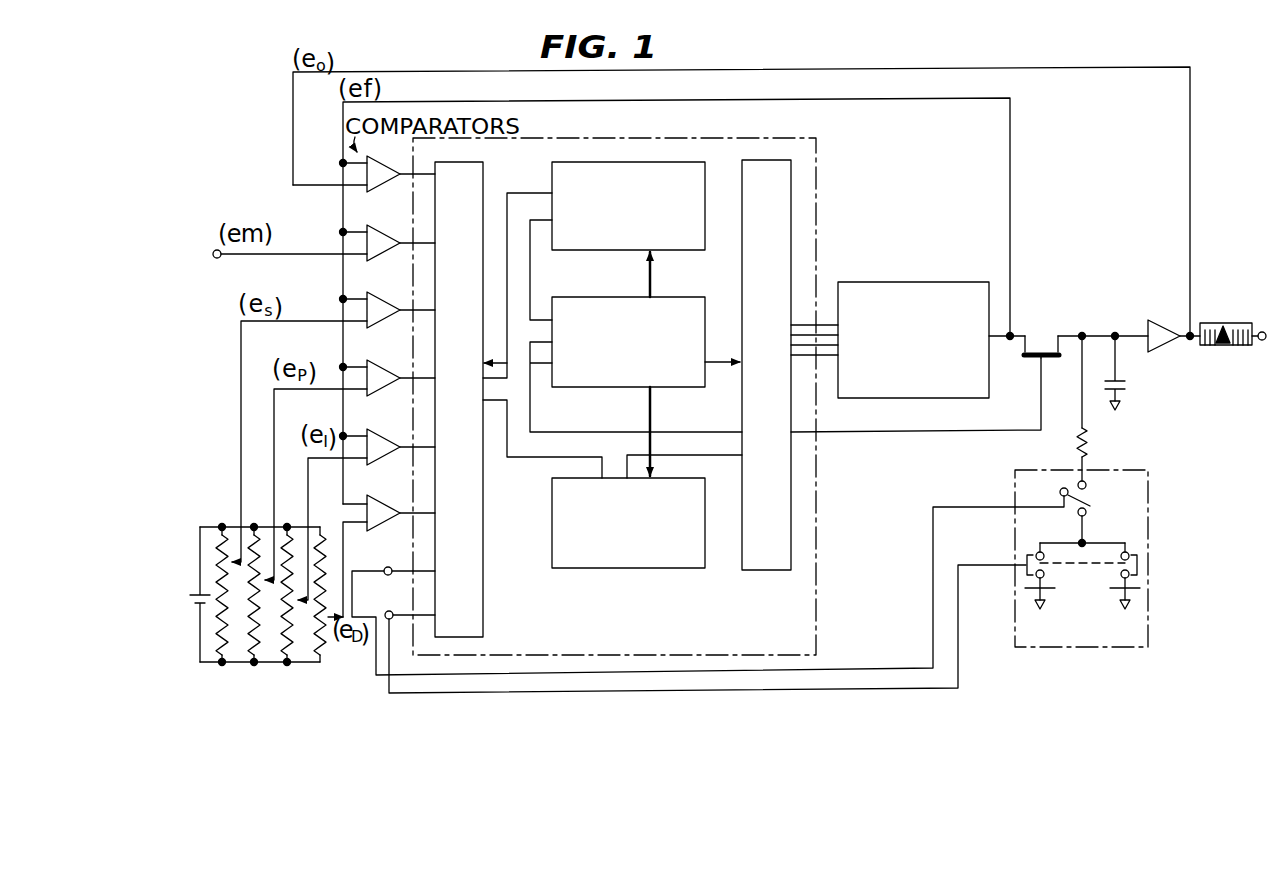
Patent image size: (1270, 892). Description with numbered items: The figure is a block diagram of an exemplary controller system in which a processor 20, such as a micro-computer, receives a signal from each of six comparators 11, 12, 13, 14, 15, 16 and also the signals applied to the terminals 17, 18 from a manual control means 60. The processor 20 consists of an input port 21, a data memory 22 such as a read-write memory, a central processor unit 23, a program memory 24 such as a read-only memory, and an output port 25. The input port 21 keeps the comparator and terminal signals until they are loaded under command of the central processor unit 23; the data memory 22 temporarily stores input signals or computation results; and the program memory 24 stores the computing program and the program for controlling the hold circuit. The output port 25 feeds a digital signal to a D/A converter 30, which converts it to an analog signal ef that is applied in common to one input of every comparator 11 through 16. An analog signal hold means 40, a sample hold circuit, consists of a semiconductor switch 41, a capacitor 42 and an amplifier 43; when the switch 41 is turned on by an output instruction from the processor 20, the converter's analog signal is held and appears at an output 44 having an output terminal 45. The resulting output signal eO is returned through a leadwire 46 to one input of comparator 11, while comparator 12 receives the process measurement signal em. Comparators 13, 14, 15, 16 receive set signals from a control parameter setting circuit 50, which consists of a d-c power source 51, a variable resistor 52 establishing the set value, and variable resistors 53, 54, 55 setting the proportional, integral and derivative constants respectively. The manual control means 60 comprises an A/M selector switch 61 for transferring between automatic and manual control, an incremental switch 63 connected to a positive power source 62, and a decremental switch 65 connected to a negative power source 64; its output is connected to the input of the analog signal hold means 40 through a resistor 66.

The comparator 11 is at (371, 160).
The comparator 12 is at (371, 226).
The comparator 13 is at (371, 294).
The comparator 14 is at (371, 361).
The comparator 15 is at (371, 430).
The comparator 16 is at (371, 496).
The terminal 17 is at (394, 564).
The terminal 18 is at (392, 622).
The processor 20 is at (720, 138).
The input port 21 is at (483, 578).
The data memory 22 is at (596, 250).
The central processor unit 23 is at (596, 387).
The program memory 24 is at (598, 568).
The output port 25 is at (768, 570).
The D/A converter 30 is at (910, 282).
The analog signal hold means 40 is at (1125, 322).
The semiconductor switch 41 is at (1040, 350).
The capacitor 42 is at (1124, 388).
The amplifier 43 is at (1160, 320).
The output 44 is at (1212, 346).
The output terminal 45 is at (1260, 332).
The leadwire 46 is at (974, 68).
The control parameter setting circuit 50 is at (237, 522).
The d-c power source 51 is at (186, 594).
The variable resistor 52 is at (214, 642).
The variable resistor 53 is at (247, 642).
The variable resistor 54 is at (281, 642).
The variable resistor 55 is at (323, 642).
The manual control means 60 is at (1127, 470).
The A/M selector switch 61 is at (1090, 506).
The positive power source 62 is at (1048, 594).
The incremental switch 63 is at (1020, 568).
The negative power source 64 is at (1112, 594).
The decremental switch 65 is at (1140, 568).
The resistor 66 is at (1078, 443).